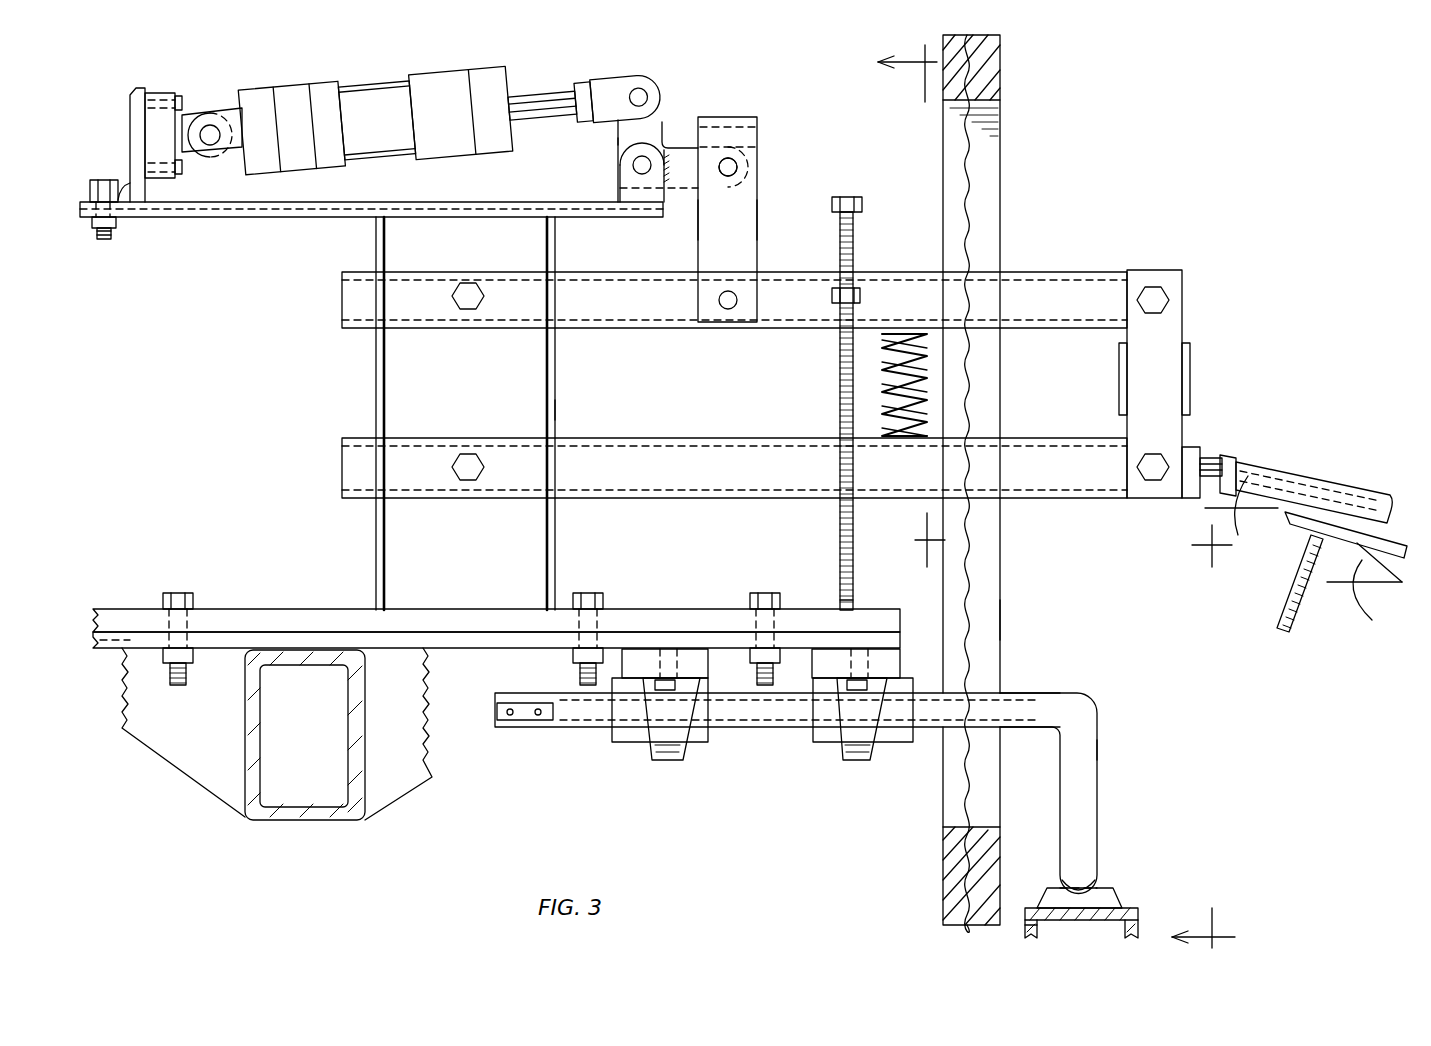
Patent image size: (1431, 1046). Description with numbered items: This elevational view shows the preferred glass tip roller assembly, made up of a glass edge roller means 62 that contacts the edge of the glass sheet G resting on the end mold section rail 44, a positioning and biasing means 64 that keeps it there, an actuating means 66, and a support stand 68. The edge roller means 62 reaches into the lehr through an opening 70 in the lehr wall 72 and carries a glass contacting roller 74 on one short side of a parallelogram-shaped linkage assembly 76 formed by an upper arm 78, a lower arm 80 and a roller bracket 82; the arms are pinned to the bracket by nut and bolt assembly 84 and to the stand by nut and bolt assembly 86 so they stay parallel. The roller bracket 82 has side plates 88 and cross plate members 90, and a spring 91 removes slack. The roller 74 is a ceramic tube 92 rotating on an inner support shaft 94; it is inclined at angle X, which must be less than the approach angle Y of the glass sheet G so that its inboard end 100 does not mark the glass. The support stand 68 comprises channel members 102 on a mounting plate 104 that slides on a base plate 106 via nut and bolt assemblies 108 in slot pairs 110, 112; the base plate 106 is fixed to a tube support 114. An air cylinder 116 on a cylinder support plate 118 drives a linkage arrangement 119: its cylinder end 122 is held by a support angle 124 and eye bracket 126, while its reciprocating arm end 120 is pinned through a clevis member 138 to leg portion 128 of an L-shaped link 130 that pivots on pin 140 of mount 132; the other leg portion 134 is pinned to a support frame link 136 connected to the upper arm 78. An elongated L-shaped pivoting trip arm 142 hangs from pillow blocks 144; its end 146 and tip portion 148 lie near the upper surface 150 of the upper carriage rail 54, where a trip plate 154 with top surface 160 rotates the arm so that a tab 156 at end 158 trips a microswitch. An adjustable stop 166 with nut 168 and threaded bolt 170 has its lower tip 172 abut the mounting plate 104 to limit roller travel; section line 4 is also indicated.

The section line 4- 4 is at (1045, 497).
The end mold section rail 44 is at (1295, 617).
The upper carriage rail 54 is at (1025, 925).
The glass edge roller means 62 is at (1345, 465).
The positioning and biasing means 64 is at (782, 152).
The actuating means 66 is at (428, 52).
The support stand 68 is at (558, 363).
The opening 70 is at (1001, 612).
The lehr wall 72 is at (942, 870).
The glass contacting roller 74 is at (1350, 478).
The parallelogram-shaped linkage assembly 76 is at (1055, 228).
The upper arm 78 is at (886, 272).
The lower arm 80 is at (796, 437).
The roller bracket 82 is at (1185, 330).
The nut and bolt assembly 84 is at (1152, 287).
The nut and bolt assembly 86 is at (468, 283).
The side plate 88 is at (1187, 430).
The cross plate member 90 is at (1118, 376).
The spring 91 is at (918, 364).
The ceramic tube 92 is at (1300, 470).
The inner support shaft 94 is at (1278, 470).
The inboard end 100 is at (1395, 504).
The channel member 102 is at (556, 412).
The mounting plate 104 is at (128, 620).
The base plate 106 is at (93, 630).
The nut and bolt assembly 108 is at (179, 592).
The slot pair 110 is at (97, 650).
The slot pair 112 is at (562, 638).
The tube support 114 is at (303, 822).
The air cylinder 116 is at (372, 96).
The cylinder support plate 118 is at (220, 217).
The linkage arrangement 119 is at (697, 232).
The reciprocating arm end 120 is at (538, 105).
The cylinder end 122 is at (285, 90).
The support angle 124 is at (128, 125).
The eye bracket 126 is at (196, 112).
The leg portion 128 is at (665, 128).
The L-shaped link 130 is at (618, 133).
The mount 132 is at (618, 184).
The leg portion 134 is at (748, 182).
The support frame link 136 is at (758, 222).
The clevis member 138 is at (608, 111).
The pin 140 is at (633, 165).
The pivoting trip arm 142 is at (1048, 693).
The pillow block 144 is at (842, 760).
The end 146 is at (1098, 745).
The tip portion 148 is at (1083, 900).
The upper surface 150 is at (1045, 893).
The trip plate 154 is at (1122, 900).
The tab 156 is at (520, 722).
The end 158 is at (547, 730).
The top surface 160 is at (1056, 885).
The adjustable stop 166 is at (838, 350).
The nut 168 is at (832, 295).
The threaded bolt 170 is at (832, 256).
The lower tip 172 is at (855, 610).
The glass sheet G is at (1397, 553).
The roller inclination angle X is at (1235, 521).
The approach angle Y is at (1364, 588).